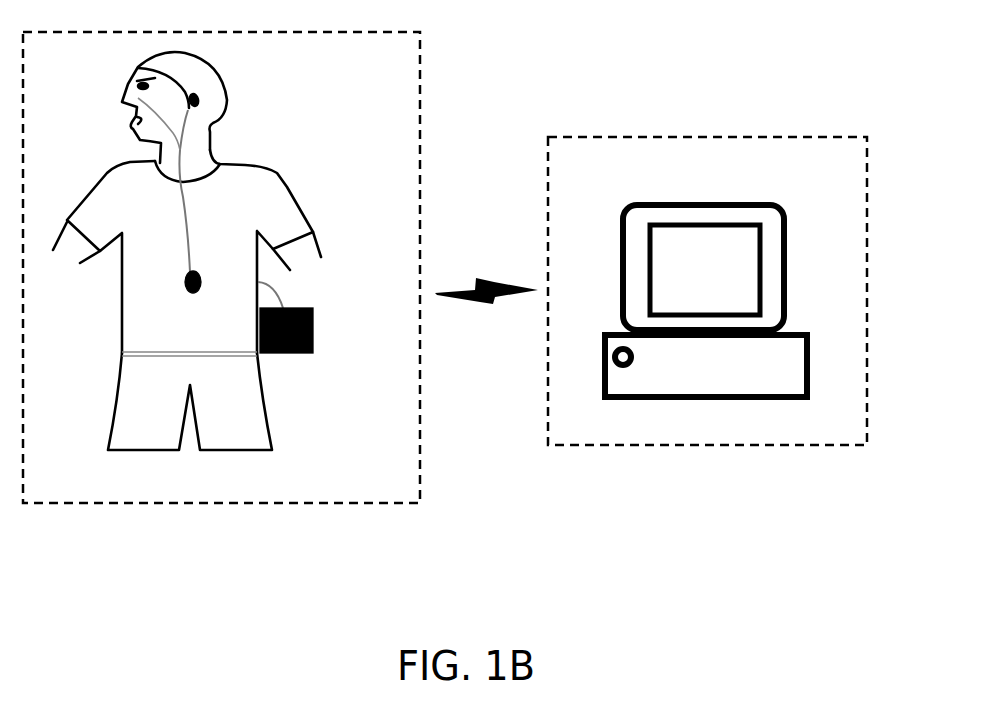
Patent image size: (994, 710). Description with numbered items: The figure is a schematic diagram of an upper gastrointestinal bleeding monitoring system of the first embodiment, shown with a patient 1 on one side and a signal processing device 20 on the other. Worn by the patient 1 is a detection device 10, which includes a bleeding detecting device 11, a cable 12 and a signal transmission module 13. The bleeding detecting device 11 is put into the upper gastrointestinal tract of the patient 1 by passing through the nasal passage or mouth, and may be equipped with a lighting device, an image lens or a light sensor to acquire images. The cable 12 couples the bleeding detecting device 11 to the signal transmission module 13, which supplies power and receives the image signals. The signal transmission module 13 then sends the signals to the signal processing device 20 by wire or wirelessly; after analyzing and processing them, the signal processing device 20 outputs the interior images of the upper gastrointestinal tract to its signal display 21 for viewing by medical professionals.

The patient 1 is at (277, 173).
The detection device 10 is at (422, 70).
The bleeding detecting device 11 is at (188, 294).
The cable 12 is at (188, 217).
The signal transmission module 13 is at (313, 338).
The signal processing device 20 is at (867, 205).
The signal display 21 is at (713, 202).